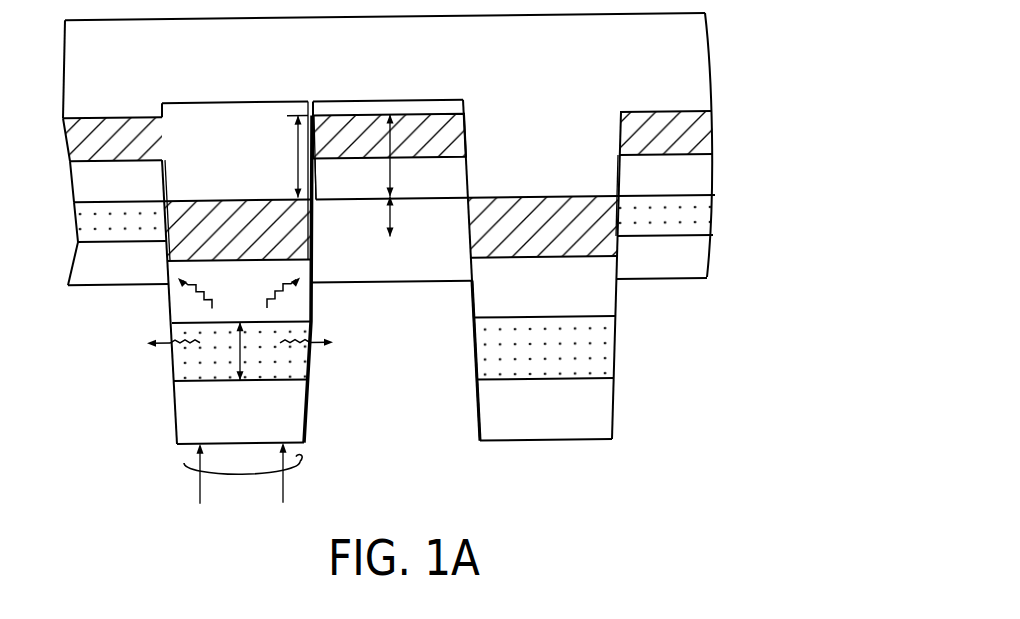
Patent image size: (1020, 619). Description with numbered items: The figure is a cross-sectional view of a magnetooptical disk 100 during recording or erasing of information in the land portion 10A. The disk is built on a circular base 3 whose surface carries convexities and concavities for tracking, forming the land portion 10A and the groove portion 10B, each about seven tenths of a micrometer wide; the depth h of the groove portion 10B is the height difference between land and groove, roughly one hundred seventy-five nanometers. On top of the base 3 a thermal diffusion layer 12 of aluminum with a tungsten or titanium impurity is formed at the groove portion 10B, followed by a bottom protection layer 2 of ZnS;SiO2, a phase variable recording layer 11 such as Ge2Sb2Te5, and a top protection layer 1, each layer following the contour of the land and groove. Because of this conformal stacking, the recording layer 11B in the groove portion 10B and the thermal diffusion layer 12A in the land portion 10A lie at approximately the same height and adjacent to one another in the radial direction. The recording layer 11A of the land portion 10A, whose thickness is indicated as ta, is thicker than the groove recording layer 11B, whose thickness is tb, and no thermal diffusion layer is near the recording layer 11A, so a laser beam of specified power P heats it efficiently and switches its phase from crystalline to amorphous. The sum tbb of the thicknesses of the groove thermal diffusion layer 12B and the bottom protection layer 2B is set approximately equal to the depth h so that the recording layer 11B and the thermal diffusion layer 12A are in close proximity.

The magnetooptical disk 100 is at (480, 258).
The top protection layer 1 is at (705, 263).
The bottom protection layer 2 is at (703, 190).
The base 3 is at (680, 78).
The recording layer 11 is at (708, 218).
The thermal diffusion layer 12 is at (703, 141).
The land portion 10A is at (229, 105).
The groove portion 10B is at (386, 104).
The recording layer of land portion 11A is at (290, 376).
The recording layer of groove portion 11B is at (473, 200).
The thermal diffusion layer of land portion 12A is at (206, 216).
The thermal diffusion layer in groove 12B is at (447, 137).
The bottom protection layer in groove 2B is at (447, 173).
The depth of groove portion h is at (292, 157).
The sum of film thickness tbb is at (412, 155).
The thickness dimension tb is at (404, 216).
The thickness dimension ta is at (255, 351).
The specified power P is at (300, 467).